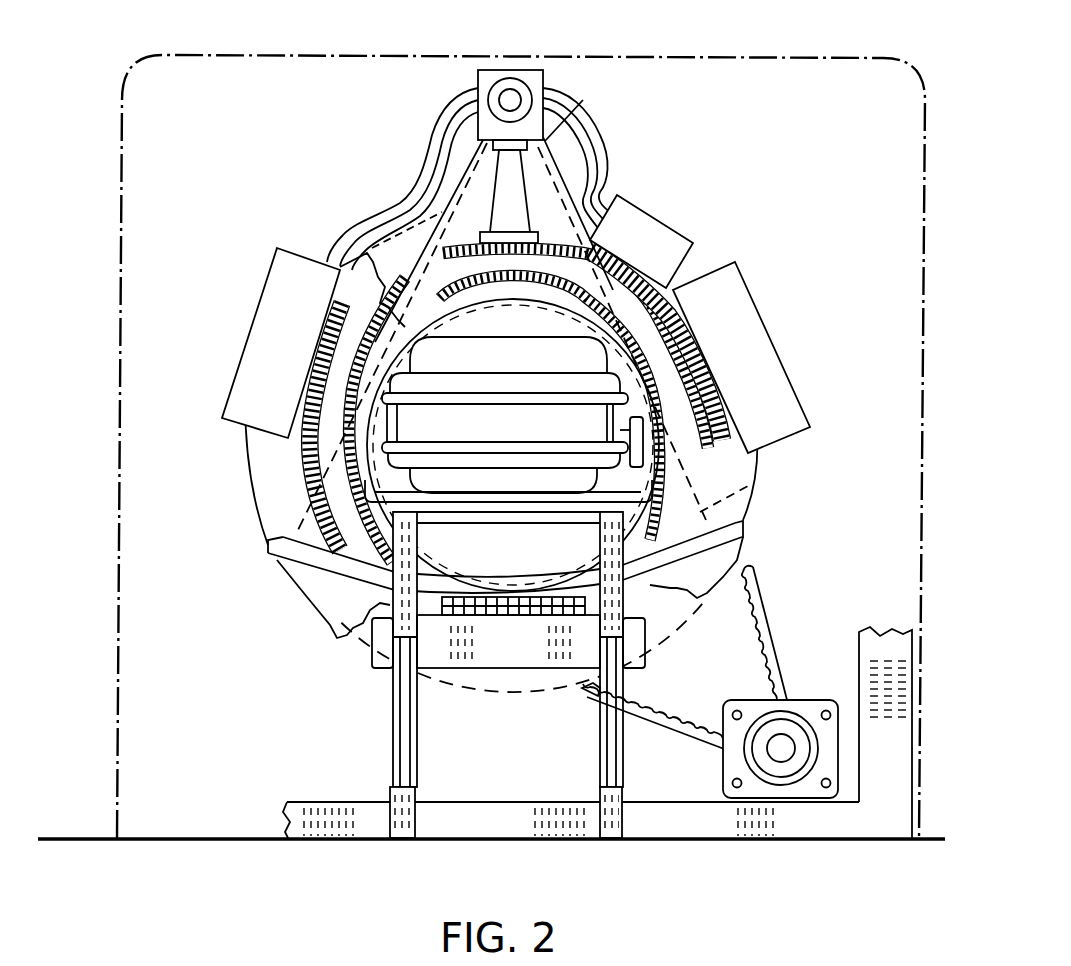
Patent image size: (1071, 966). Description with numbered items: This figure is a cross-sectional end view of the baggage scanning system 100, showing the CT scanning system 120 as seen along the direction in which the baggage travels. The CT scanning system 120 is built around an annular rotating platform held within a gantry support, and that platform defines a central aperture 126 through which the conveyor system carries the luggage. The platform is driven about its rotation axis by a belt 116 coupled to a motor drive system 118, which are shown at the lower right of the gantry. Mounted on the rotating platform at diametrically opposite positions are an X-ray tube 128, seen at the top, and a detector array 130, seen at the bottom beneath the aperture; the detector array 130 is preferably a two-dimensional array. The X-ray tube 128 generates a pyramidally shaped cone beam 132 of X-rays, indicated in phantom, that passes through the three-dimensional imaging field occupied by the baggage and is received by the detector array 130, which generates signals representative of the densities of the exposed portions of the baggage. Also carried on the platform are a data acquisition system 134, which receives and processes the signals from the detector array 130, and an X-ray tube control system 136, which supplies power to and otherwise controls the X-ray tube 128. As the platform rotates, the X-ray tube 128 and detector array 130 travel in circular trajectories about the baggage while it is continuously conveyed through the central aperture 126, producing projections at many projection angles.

The baggage scanning system 100 is at (262, 893).
The belt 116 is at (763, 603).
The motor drive system 118 is at (781, 747).
The CT scanning system 120 is at (216, 50).
The central aperture 126 is at (535, 558).
The X-ray tube 128 is at (490, 82).
The detector array 130 is at (305, 543).
The cone beam 132 is at (748, 487).
The data acquisition system 134 is at (374, 640).
The X-ray tube control system 136 is at (268, 304).